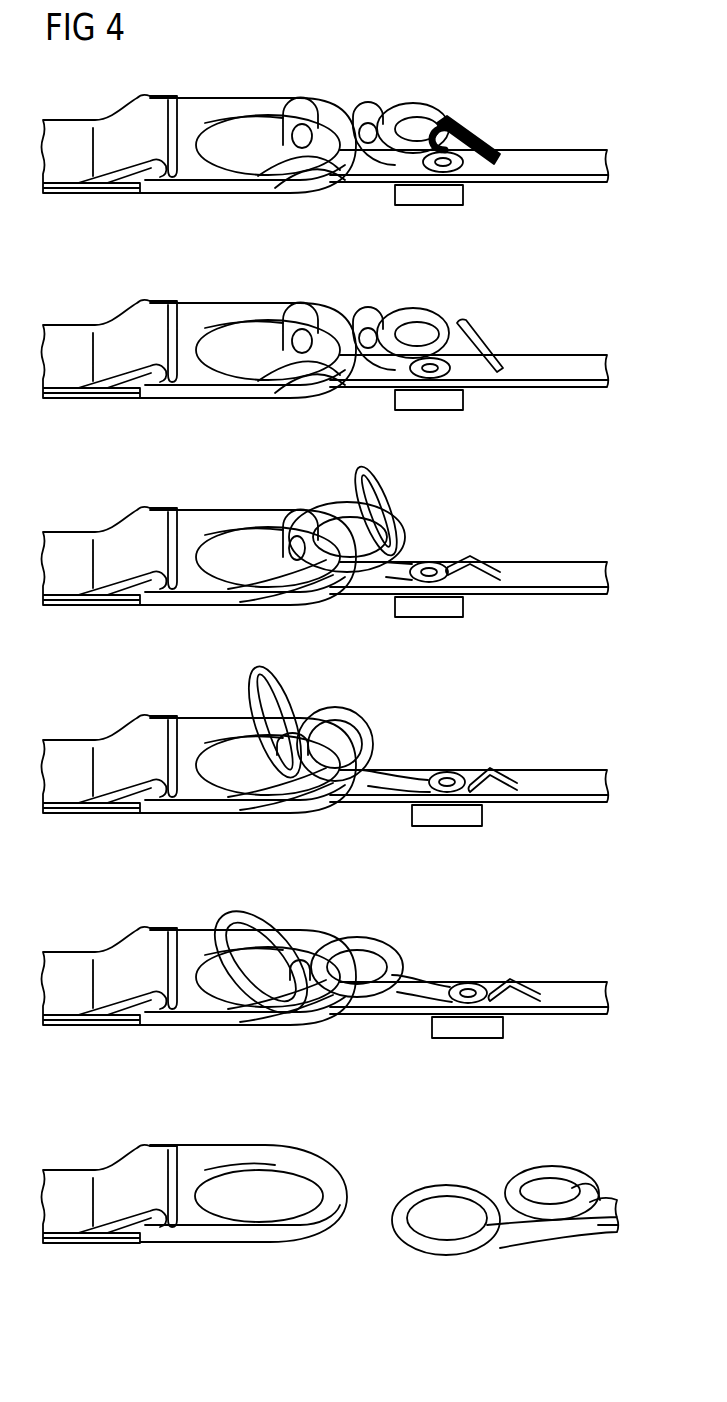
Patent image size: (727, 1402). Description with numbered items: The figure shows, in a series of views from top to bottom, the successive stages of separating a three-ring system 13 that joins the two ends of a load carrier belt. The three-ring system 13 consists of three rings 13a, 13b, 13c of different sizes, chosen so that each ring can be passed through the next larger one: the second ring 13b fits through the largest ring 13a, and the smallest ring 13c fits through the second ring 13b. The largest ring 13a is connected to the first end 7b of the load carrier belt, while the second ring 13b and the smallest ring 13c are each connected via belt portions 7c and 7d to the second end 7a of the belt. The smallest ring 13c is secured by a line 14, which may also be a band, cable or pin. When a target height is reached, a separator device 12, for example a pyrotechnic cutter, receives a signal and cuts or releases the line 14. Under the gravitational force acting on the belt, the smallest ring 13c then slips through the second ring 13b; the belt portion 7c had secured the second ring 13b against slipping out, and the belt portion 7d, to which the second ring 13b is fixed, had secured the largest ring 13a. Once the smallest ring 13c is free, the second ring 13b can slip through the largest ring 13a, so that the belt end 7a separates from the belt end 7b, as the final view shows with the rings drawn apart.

The second end of the load carrier belt 7a is at (583, 157).
The first end of the load carrier belt 7b is at (70, 132).
The belt portion 7c is at (406, 567).
The belt portion 7d is at (296, 575).
The separator device 12 is at (463, 193).
The three-ring system 13 is at (445, 93).
The largest ring 13a is at (270, 310).
The second ring 13b is at (338, 310).
The smallest ring 13c is at (418, 312).
The line 14 is at (478, 340).